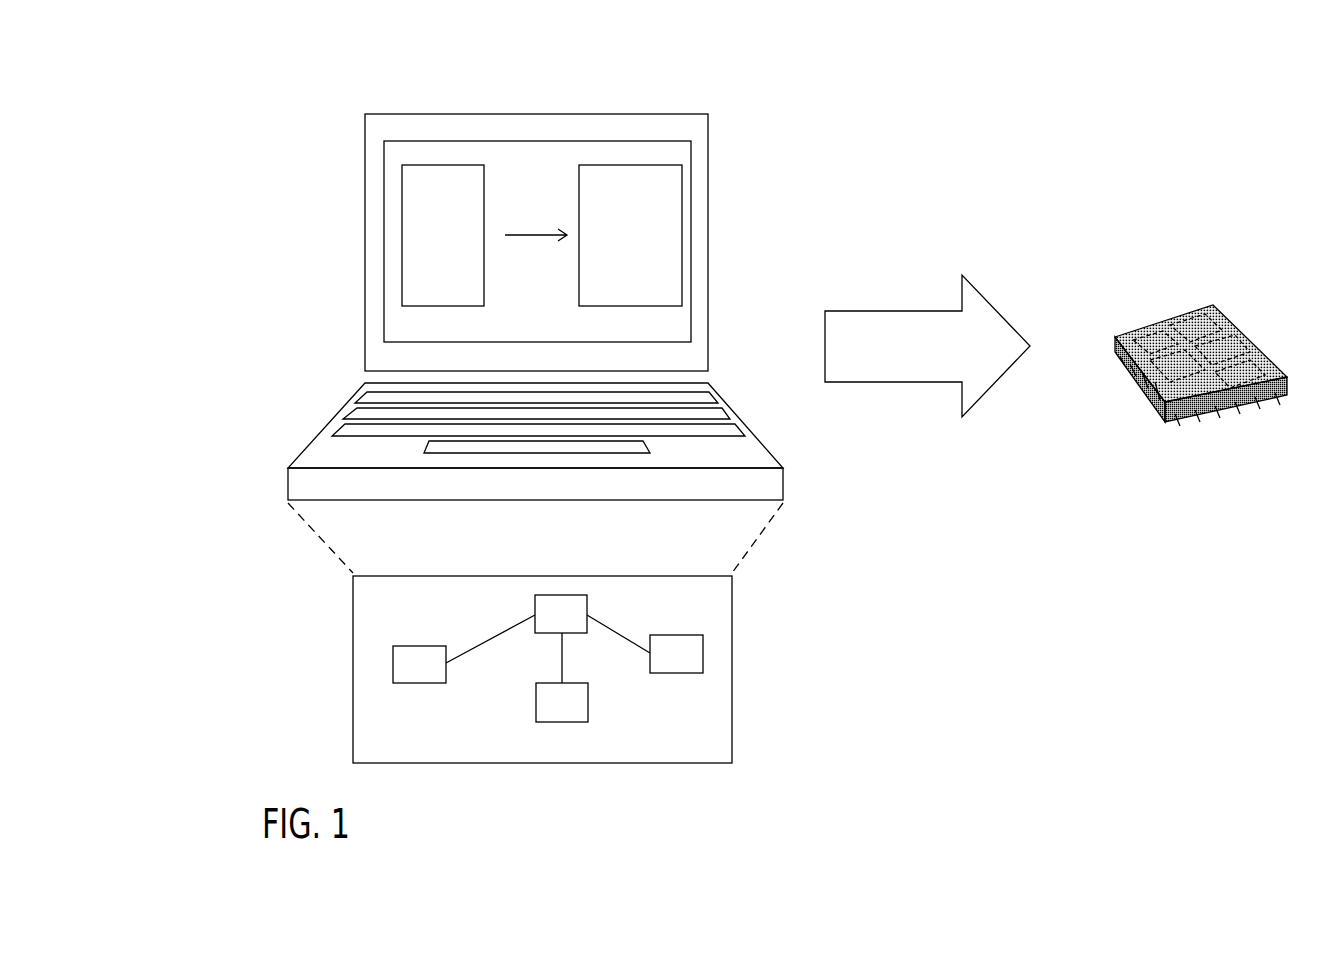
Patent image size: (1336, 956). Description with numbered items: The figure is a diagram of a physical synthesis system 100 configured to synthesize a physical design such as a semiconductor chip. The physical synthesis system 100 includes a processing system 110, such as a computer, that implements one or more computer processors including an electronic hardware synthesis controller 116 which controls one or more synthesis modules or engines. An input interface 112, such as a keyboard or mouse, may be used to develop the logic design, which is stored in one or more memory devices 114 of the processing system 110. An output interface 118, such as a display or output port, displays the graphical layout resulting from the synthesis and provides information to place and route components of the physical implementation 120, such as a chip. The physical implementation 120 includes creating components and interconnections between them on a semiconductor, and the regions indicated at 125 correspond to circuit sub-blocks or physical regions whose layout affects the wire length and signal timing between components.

The physical synthesis system 100 is at (205, 131).
The processing system 110 is at (385, 113).
The input interface 112 is at (419, 664).
The memory devices 114 is at (562, 702).
The electronic hardware synthesis controller 116 is at (561, 614).
The output interface 118 is at (676, 654).
The physical implementation 120 is at (1190, 312).
The circuit cells 125 is at (1176, 408).